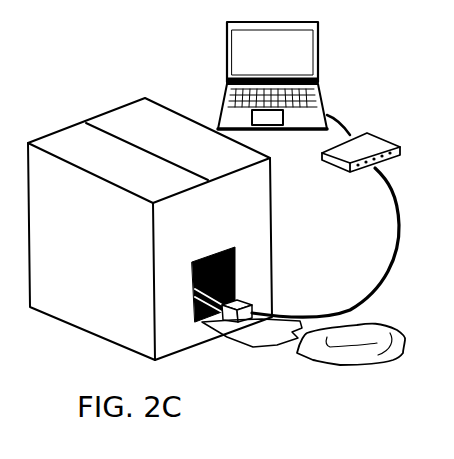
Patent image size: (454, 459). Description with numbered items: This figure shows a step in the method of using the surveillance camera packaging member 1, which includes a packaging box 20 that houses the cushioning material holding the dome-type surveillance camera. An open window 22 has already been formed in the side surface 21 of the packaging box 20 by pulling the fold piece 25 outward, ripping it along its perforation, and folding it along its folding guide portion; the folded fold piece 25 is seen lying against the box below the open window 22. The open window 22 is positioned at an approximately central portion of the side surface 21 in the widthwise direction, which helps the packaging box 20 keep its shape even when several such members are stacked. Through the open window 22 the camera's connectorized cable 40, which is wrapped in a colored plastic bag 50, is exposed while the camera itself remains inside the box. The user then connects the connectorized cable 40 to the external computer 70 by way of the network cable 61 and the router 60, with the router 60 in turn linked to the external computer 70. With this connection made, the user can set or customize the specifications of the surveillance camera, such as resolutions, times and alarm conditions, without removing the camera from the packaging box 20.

The surveillance camera packaging member 1 is at (90, 92).
The packaging box 20 is at (158, 112).
The side surface 21 is at (252, 211).
The open window 22 is at (221, 254).
The fold piece 25 is at (252, 335).
The connectorized cable 40 is at (238, 301).
The colored plastic bag 50 is at (392, 333).
The router 60 is at (379, 140).
The network cable 61 is at (399, 202).
The external computer 70 is at (319, 43).